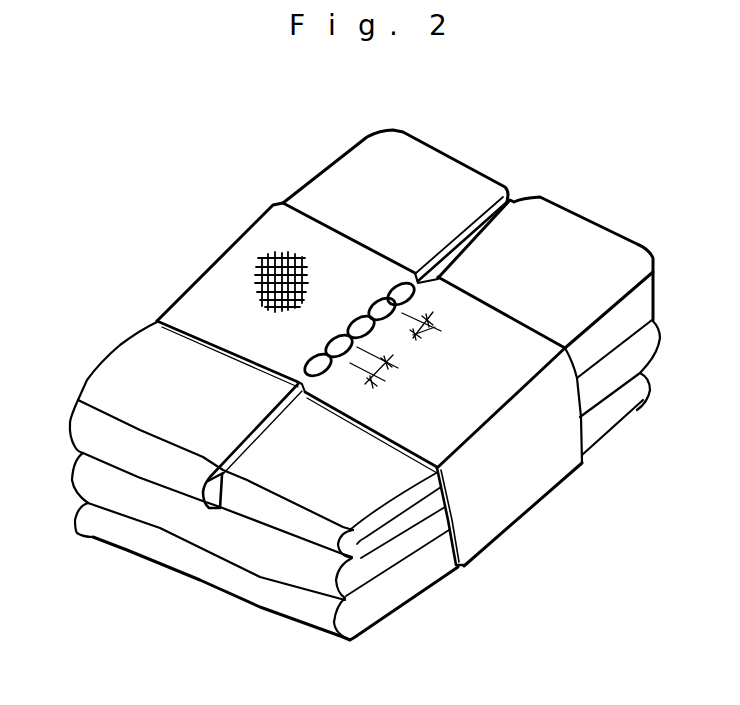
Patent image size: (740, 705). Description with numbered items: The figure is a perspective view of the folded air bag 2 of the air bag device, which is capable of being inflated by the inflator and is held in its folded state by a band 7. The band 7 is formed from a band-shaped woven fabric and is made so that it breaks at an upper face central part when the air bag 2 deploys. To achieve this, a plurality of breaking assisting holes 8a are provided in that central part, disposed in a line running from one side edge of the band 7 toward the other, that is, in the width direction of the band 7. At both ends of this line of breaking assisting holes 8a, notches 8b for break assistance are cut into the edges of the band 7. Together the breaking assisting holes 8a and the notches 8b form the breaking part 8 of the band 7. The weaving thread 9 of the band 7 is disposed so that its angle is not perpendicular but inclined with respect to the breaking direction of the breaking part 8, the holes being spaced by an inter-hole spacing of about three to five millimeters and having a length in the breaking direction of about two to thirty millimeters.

The air bag 2 is at (647, 250).
The band 7 is at (192, 302).
The breaking part 8 is at (332, 378).
The breaking assisting holes 8a is at (354, 319).
The notches 8b is at (427, 278).
The weaving thread 9 is at (263, 247).